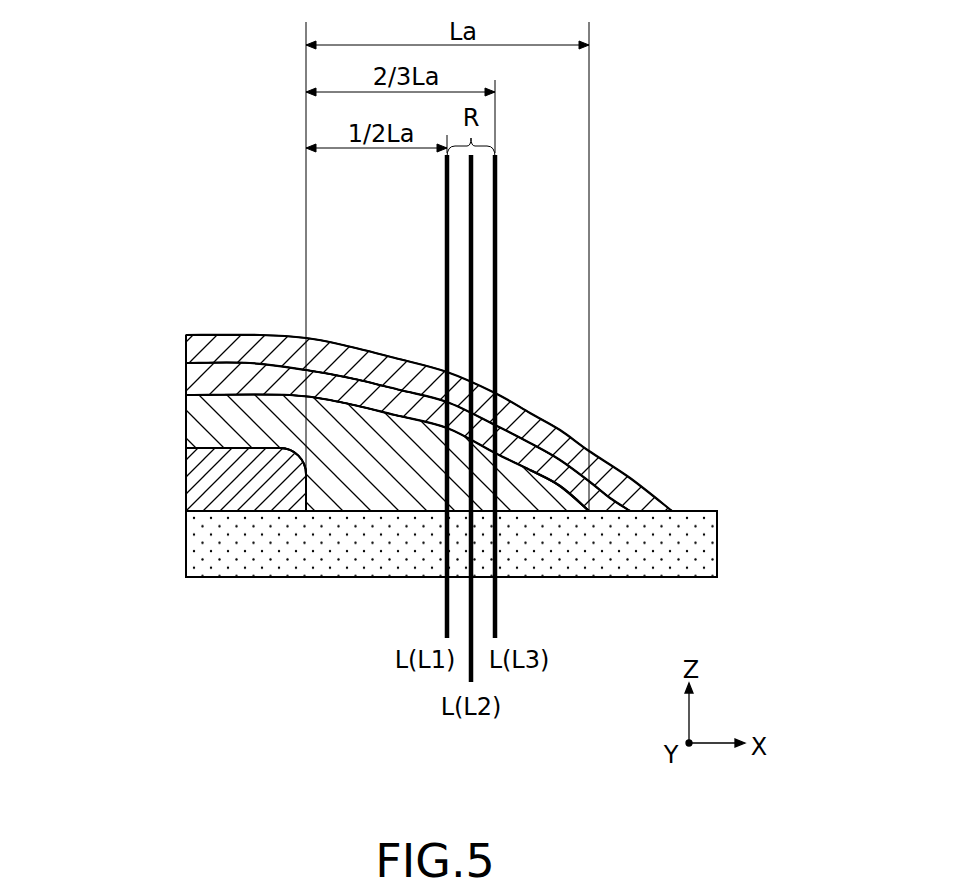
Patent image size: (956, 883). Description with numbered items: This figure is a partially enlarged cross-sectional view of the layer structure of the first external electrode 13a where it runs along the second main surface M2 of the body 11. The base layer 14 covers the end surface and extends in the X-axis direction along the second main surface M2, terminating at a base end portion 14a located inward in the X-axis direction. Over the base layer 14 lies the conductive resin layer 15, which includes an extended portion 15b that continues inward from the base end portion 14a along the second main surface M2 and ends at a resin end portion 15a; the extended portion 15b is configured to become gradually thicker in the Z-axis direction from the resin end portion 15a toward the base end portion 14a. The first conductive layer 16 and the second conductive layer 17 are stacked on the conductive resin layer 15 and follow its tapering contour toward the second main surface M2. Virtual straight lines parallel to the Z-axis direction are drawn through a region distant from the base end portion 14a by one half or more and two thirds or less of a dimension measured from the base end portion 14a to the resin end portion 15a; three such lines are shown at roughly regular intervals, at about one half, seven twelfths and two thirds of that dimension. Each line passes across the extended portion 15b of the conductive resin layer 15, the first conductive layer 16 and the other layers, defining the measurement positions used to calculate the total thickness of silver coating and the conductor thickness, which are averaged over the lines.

The substrate 11 is at (188, 534).
The first external electrode 13a is at (207, 333).
The base layer 14 is at (188, 478).
The base end portion 14a is at (304, 487).
The conductive resin layer 15 is at (190, 426).
The resin end portion 15a is at (592, 507).
The extended portion 15b is at (403, 463).
The first conductive layer 16 is at (190, 387).
The second conductive layer 17 is at (188, 356).
The second main surface M2 is at (693, 509).